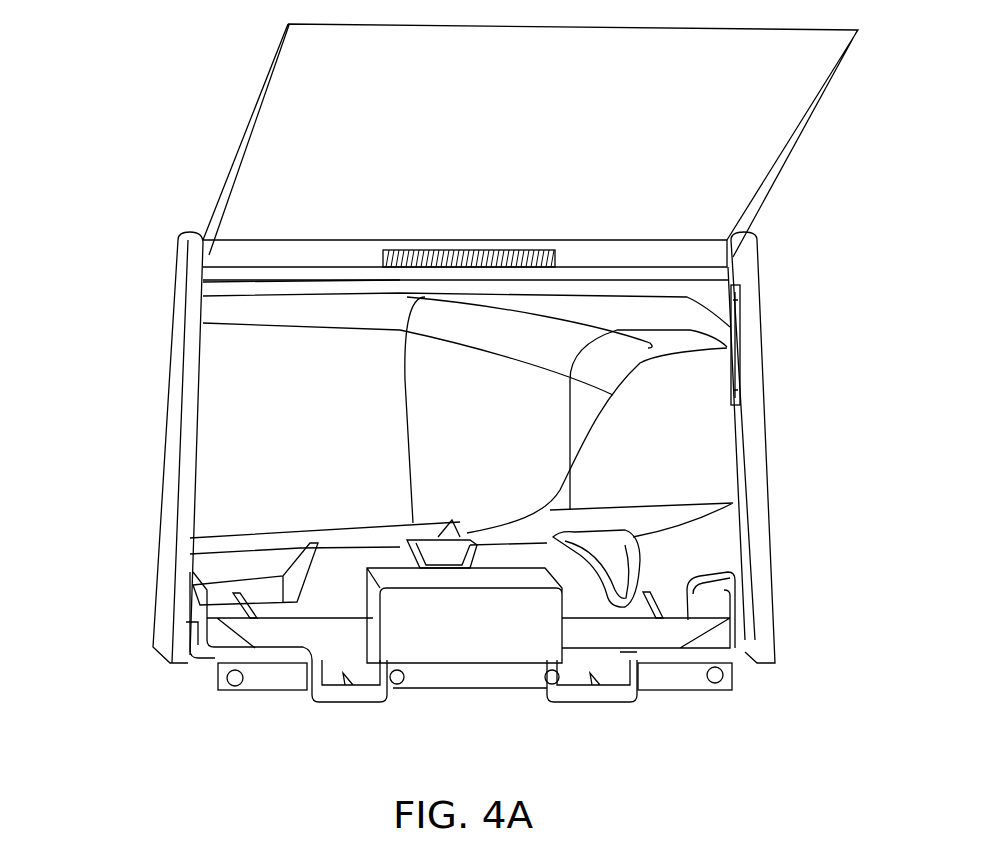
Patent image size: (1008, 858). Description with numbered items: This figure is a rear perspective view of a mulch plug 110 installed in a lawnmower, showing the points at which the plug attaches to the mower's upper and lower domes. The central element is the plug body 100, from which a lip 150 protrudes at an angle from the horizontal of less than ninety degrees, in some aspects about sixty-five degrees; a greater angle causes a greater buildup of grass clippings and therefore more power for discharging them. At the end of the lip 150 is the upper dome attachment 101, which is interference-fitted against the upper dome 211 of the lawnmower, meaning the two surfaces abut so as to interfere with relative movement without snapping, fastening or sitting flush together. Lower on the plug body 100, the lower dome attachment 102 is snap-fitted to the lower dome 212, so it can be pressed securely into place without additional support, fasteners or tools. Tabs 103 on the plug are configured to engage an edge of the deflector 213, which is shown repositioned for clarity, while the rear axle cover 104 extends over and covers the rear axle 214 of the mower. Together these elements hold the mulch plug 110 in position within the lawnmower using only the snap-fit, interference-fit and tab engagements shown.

The plug body 100 is at (613, 470).
The upper dome attachment 101 is at (716, 365).
The lower dome attachment 102 is at (252, 533).
The tabs 103 is at (307, 700).
The rear axle cover 104 is at (612, 634).
The mulch plug 110 is at (543, 507).
The lip 150 is at (705, 447).
The upper dome 211 is at (650, 342).
The lower dome 212 is at (233, 508).
The deflector 213 is at (267, 213).
The rear axle 214 is at (193, 640).